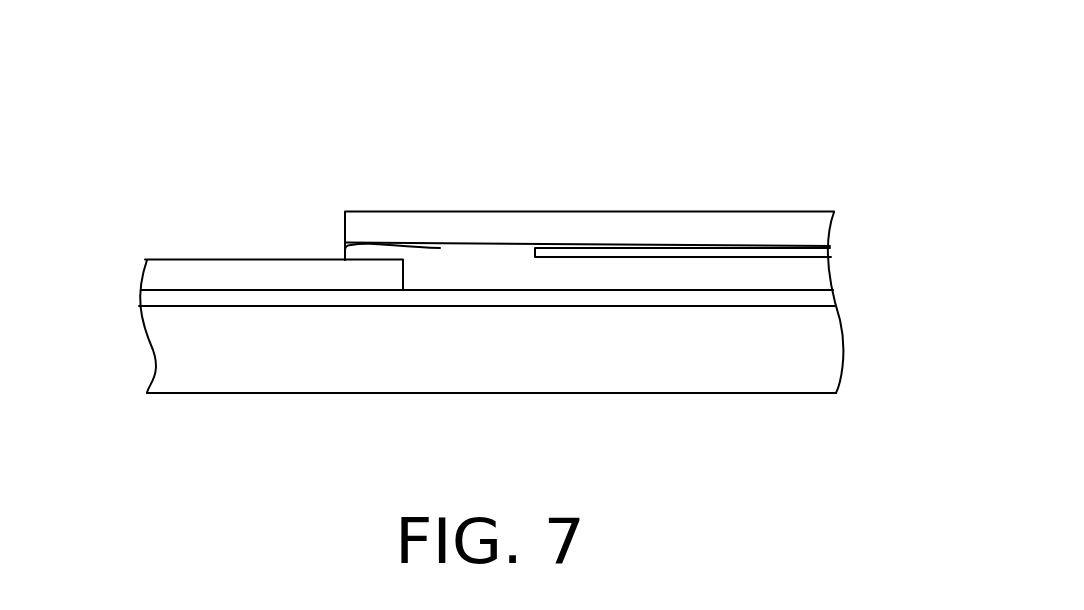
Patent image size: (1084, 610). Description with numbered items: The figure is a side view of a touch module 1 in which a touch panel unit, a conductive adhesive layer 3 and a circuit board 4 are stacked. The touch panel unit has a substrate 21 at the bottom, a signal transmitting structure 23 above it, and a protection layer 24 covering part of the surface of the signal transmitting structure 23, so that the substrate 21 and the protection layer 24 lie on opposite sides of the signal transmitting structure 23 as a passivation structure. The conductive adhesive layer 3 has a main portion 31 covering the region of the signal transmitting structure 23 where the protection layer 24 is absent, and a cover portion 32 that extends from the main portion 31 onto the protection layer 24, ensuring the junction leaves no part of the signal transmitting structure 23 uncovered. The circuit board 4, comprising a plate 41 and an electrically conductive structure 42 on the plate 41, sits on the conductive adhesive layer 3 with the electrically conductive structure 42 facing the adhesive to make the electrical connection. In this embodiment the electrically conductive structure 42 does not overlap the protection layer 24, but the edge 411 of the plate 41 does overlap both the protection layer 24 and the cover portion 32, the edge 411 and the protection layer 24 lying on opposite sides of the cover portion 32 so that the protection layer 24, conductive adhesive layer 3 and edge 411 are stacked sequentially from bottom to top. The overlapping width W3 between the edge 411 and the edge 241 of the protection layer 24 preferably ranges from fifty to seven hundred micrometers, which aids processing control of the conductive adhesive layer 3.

The touch module 1 is at (160, 67).
The substrate 21 is at (782, 349).
The signal transmitting structure 23 is at (163, 298).
The protection layer 24 is at (170, 278).
The edge of the protection layer 241 is at (377, 247).
The conductive adhesive layer 3 is at (510, 157).
The main portion 31 is at (548, 275).
The cover portion 32 is at (403, 270).
The circuit board 4 is at (915, 200).
The plate 41 is at (802, 235).
The edge of the plate 411 is at (345, 228).
The electrically conductive structure 42 is at (812, 252).
The overlapping width W3 is at (403, 259).